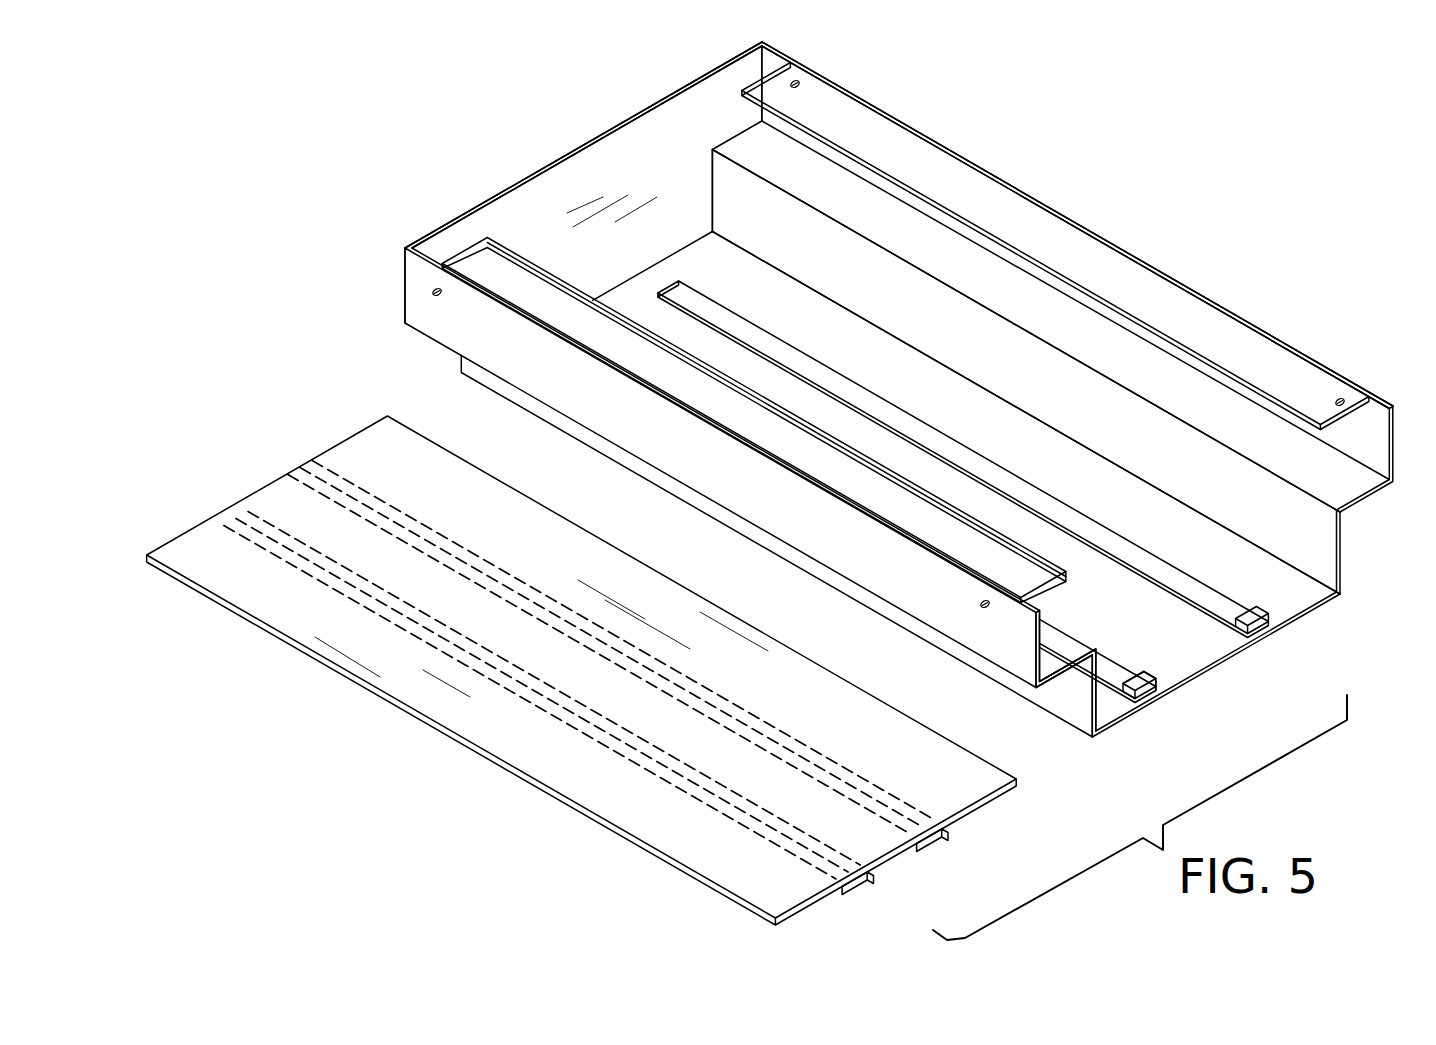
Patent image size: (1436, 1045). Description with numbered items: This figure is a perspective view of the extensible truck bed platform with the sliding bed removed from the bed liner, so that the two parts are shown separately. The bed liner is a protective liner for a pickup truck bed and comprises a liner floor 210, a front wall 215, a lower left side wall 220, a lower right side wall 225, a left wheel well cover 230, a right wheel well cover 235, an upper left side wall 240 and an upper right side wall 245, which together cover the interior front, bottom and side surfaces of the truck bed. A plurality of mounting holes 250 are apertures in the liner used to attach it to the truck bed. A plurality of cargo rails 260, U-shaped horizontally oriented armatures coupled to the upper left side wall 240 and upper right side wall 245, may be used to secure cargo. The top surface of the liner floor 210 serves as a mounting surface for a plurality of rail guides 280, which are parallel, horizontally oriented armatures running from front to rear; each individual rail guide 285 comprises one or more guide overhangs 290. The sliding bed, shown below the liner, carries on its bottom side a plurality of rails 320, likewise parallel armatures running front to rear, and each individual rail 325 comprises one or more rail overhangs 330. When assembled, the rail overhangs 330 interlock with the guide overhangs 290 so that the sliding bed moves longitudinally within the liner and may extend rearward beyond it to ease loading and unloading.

The liner floor 210 is at (1015, 437).
The front wall 215 is at (575, 177).
The lower left side wall 220 is at (1067, 715).
The lower right side wall 225 is at (1158, 445).
The left wheel well cover 230 is at (1053, 660).
The right wheel well cover 235 is at (1343, 483).
The upper left side wall 240 is at (426, 320).
The upper right side wall 245 is at (1033, 222).
The mounting holes 250 is at (799, 85).
The cargo rails 260 is at (898, 180).
The rail guides 280 is at (1155, 676).
The rail guide 285 is at (1132, 693).
The guide overhangs 290 is at (1167, 686).
The rails 320 is at (433, 563).
The rail 325 is at (697, 797).
The rail overhangs 330 is at (860, 887).